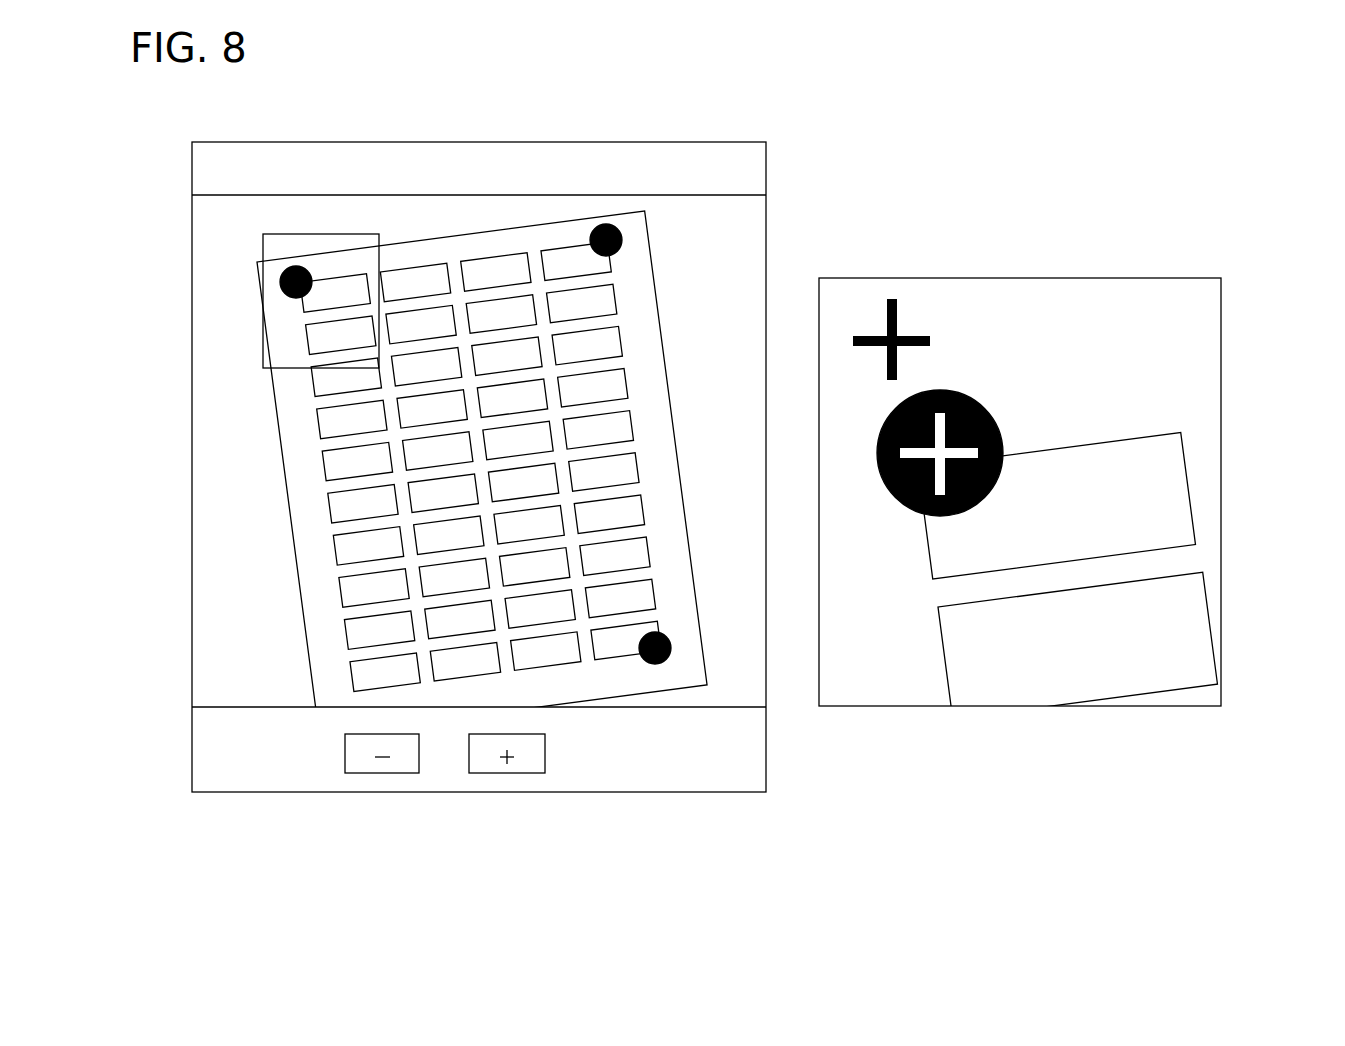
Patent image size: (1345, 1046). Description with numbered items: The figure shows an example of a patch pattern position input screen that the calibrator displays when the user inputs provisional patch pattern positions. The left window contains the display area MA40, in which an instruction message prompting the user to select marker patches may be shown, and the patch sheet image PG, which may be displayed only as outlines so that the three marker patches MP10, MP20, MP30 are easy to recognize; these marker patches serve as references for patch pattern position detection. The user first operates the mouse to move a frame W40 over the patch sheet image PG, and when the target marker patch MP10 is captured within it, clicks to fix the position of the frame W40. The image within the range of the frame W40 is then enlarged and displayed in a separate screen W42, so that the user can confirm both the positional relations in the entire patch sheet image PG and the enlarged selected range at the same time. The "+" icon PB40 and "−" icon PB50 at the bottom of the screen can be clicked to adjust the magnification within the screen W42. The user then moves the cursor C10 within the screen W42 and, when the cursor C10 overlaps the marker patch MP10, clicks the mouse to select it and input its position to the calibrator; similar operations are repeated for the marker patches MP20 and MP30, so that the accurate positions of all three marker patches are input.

The display area MA40 is at (737, 167).
The patch sheet image PG is at (650, 245).
The frame W40 is at (379, 234).
The screen W42 is at (1220, 352).
The marker patch MP10 is at (280, 285).
The marker patch MP20 is at (605, 226).
The marker patch MP30 is at (665, 660).
The "−" icon PB50 is at (393, 773).
The "+" icon PB40 is at (528, 773).
The cursor C10 is at (895, 297).